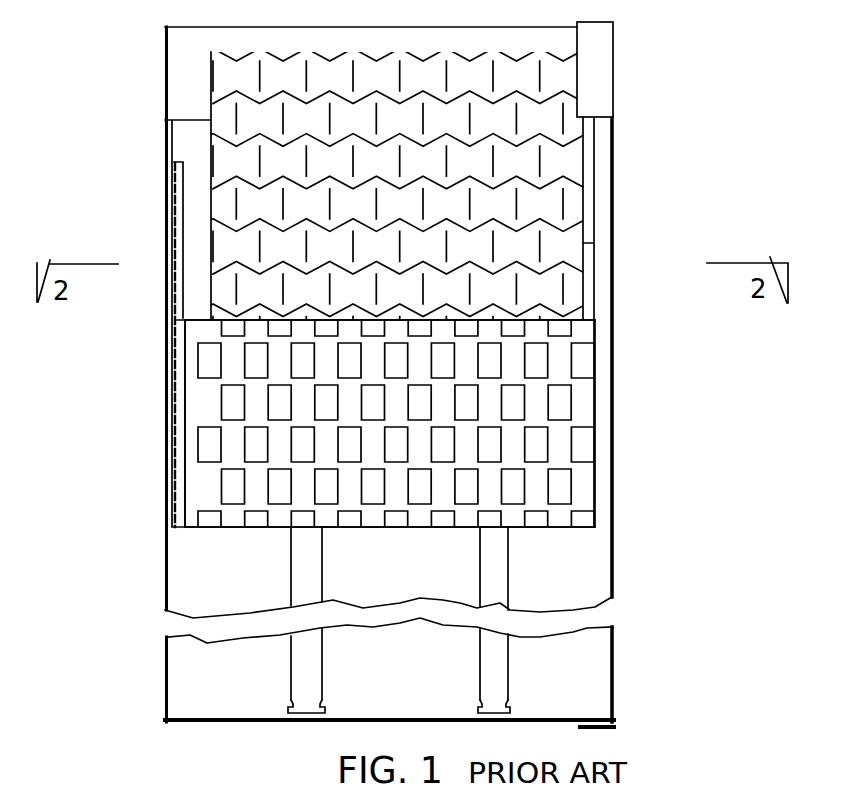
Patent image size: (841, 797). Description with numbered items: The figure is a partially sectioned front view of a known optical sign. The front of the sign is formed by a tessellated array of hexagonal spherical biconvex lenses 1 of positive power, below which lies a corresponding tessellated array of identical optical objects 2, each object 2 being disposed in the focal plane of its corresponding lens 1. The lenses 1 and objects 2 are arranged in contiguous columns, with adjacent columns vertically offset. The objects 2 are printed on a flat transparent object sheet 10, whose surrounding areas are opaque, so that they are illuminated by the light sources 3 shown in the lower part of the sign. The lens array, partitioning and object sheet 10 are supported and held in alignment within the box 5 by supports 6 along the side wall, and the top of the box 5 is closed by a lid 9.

The hexagonal spherical biconvex lens 1 is at (232, 163).
The optical object 2 is at (563, 402).
The light source 3 is at (498, 665).
The box 5 is at (165, 408).
The support 6 is at (182, 257).
The lid 9 is at (608, 75).
The object sheet 10 is at (560, 447).